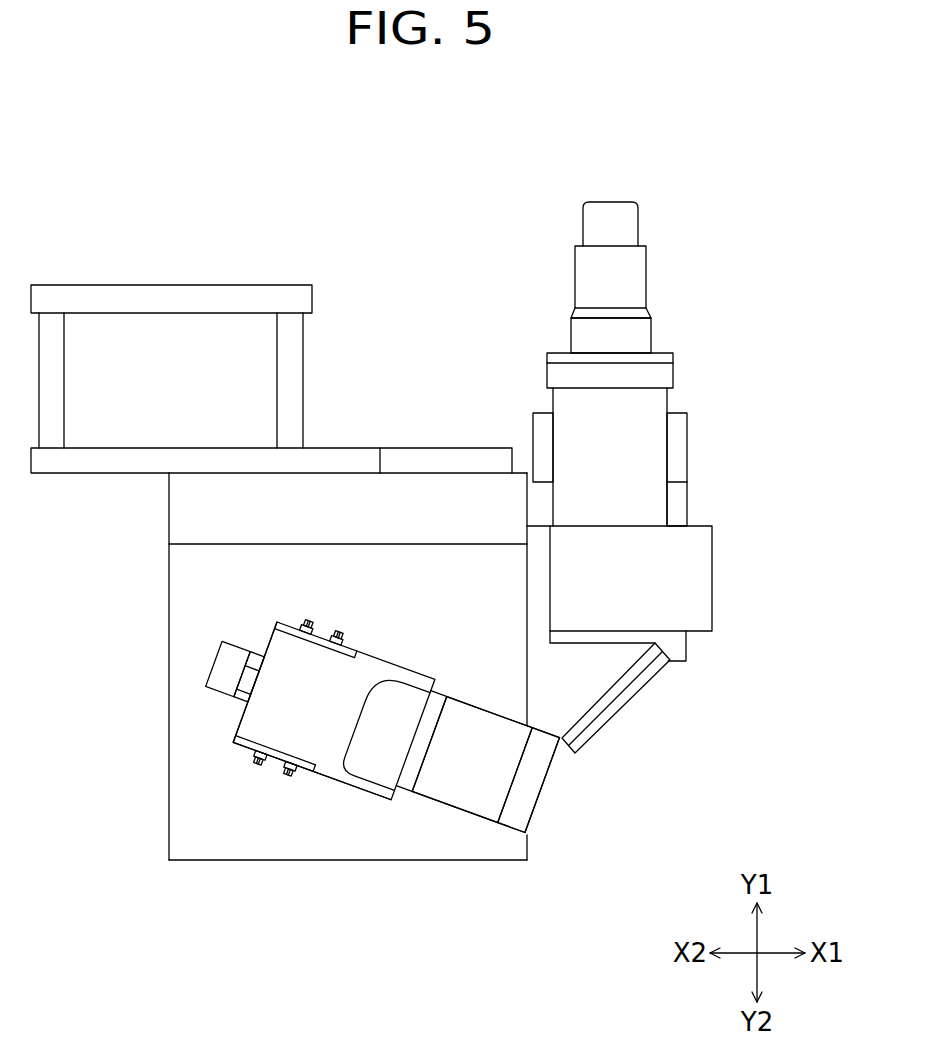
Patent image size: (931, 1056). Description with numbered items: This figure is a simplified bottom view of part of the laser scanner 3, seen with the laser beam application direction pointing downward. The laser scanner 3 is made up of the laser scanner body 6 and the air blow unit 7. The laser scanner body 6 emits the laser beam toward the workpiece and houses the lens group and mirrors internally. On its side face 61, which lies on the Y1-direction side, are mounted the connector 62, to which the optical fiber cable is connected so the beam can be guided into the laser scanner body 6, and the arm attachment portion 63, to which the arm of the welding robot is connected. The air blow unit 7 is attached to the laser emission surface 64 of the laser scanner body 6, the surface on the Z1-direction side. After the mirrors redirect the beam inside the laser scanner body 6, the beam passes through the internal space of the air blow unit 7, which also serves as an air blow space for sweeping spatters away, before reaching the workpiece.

The laser scanner 3 is at (107, 179).
The laser scanner body 6 is at (448, 448).
The side face 61 is at (380, 448).
The connector 62 is at (580, 227).
The arm attachment portion 63 is at (238, 285).
The laser emission surface 64 is at (190, 624).
The air blow unit 7 is at (358, 790).